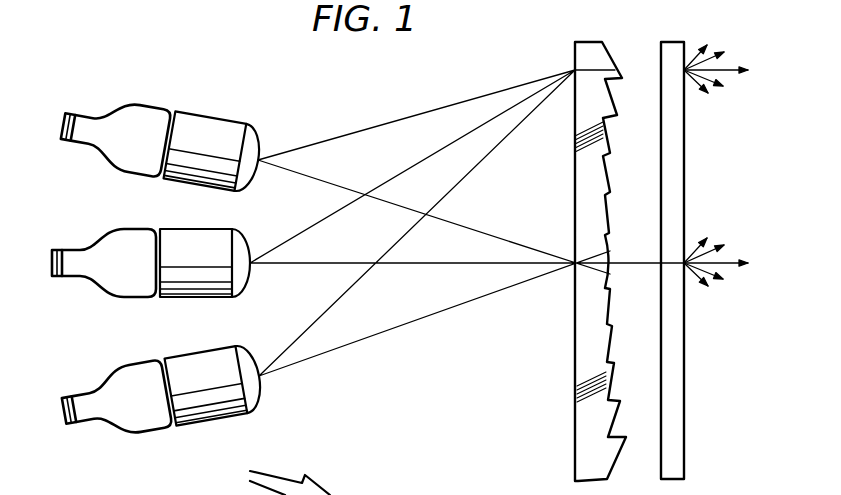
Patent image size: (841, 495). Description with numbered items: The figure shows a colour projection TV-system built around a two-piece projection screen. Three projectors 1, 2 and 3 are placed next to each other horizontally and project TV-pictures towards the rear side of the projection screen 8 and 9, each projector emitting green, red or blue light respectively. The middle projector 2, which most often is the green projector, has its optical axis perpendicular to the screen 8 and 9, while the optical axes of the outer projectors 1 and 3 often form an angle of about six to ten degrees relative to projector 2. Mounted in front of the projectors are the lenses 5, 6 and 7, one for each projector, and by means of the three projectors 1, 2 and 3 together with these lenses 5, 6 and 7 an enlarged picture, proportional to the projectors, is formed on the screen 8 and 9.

The projector 1 is at (107, 401).
The projector 2 is at (94, 263).
The projector 3 is at (107, 135).
The lens 5 is at (220, 410).
The lens 6 is at (190, 286).
The lens 7 is at (230, 128).
The projection screen 8 is at (582, 425).
The projection screen 9 is at (677, 456).